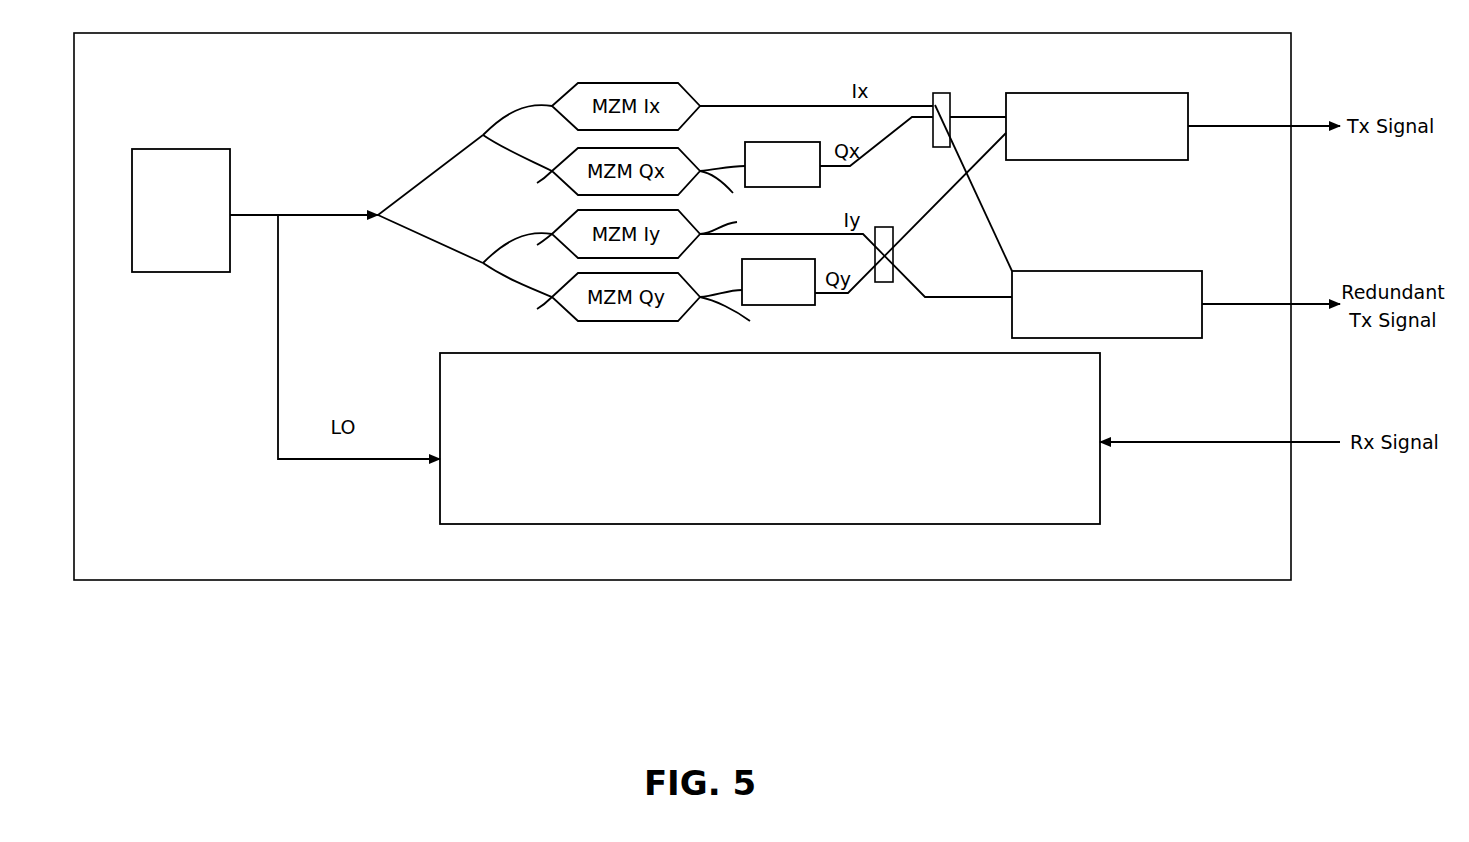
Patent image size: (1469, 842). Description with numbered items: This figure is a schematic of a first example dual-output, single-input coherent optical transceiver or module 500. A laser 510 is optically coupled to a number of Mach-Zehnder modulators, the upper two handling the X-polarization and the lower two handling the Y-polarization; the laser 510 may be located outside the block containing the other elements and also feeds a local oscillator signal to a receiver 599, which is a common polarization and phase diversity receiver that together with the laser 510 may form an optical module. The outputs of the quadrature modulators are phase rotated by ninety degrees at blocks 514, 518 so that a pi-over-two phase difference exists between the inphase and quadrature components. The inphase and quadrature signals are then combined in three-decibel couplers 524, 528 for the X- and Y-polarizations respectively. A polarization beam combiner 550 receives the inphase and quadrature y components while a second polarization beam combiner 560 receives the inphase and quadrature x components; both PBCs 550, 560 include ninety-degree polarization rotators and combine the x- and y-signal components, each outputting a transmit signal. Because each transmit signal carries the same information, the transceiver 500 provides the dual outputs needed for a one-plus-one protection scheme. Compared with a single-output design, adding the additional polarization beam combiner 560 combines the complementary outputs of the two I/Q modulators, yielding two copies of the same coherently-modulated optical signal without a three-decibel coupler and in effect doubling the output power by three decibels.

The dual-output single-input coherent optical transceiver or module 500 is at (672, 713).
The laser 510 is at (232, 175).
The phase rotation block 514 is at (787, 142).
The phase rotation block 518 is at (785, 305).
The 3 dB coupler 524 is at (940, 93).
The 3 dB coupler 528 is at (881, 227).
The polarization beam combiner 550 is at (1107, 160).
The polarization beam combiner 560 is at (1207, 282).
The receiver 599 is at (1098, 500).